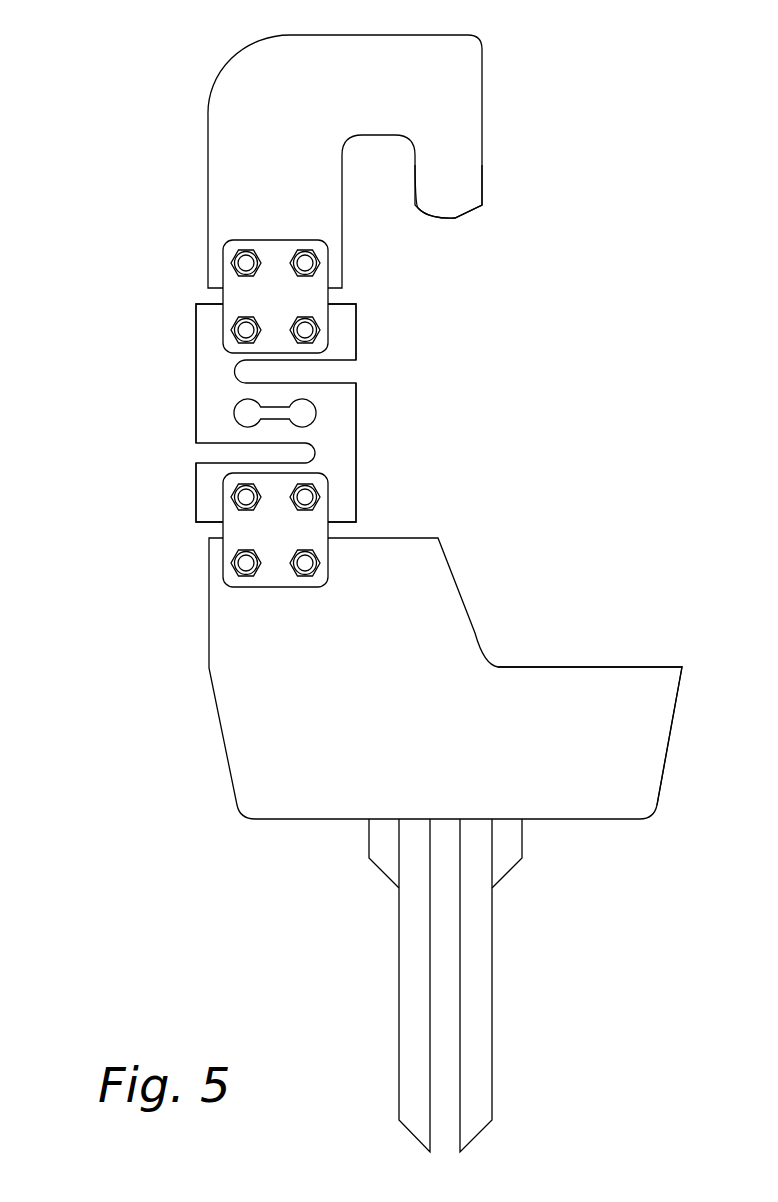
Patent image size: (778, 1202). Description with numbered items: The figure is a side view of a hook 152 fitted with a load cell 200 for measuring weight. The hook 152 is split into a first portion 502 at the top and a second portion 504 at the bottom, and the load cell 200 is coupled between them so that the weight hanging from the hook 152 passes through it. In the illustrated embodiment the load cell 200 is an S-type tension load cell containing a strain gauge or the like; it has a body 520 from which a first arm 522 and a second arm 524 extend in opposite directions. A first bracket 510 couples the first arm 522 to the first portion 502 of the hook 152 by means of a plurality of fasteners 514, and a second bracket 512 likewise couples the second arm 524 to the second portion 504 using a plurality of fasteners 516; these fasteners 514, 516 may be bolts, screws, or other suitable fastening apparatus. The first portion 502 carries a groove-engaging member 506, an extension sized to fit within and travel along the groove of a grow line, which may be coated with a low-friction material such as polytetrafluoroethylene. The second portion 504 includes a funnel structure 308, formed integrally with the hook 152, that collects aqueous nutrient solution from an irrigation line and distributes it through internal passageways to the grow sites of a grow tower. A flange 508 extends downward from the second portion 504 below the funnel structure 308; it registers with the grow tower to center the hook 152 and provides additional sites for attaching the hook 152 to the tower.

The hook 152 is at (118, 43).
The first portion 502 is at (277, 43).
The groove-engaging member 506 is at (455, 218).
The second portion 504 is at (290, 819).
The funnel structure 308 is at (668, 735).
The flange 508 is at (492, 1007).
The load cell 200 is at (402, 438).
The body 520 is at (196, 373).
The first arm 522 is at (348, 331).
The second arm 524 is at (205, 490).
The first bracket 510 is at (275, 250).
The second bracket 512 is at (275, 587).
The fasteners 514 is at (246, 263).
The fasteners 516 is at (305, 497).